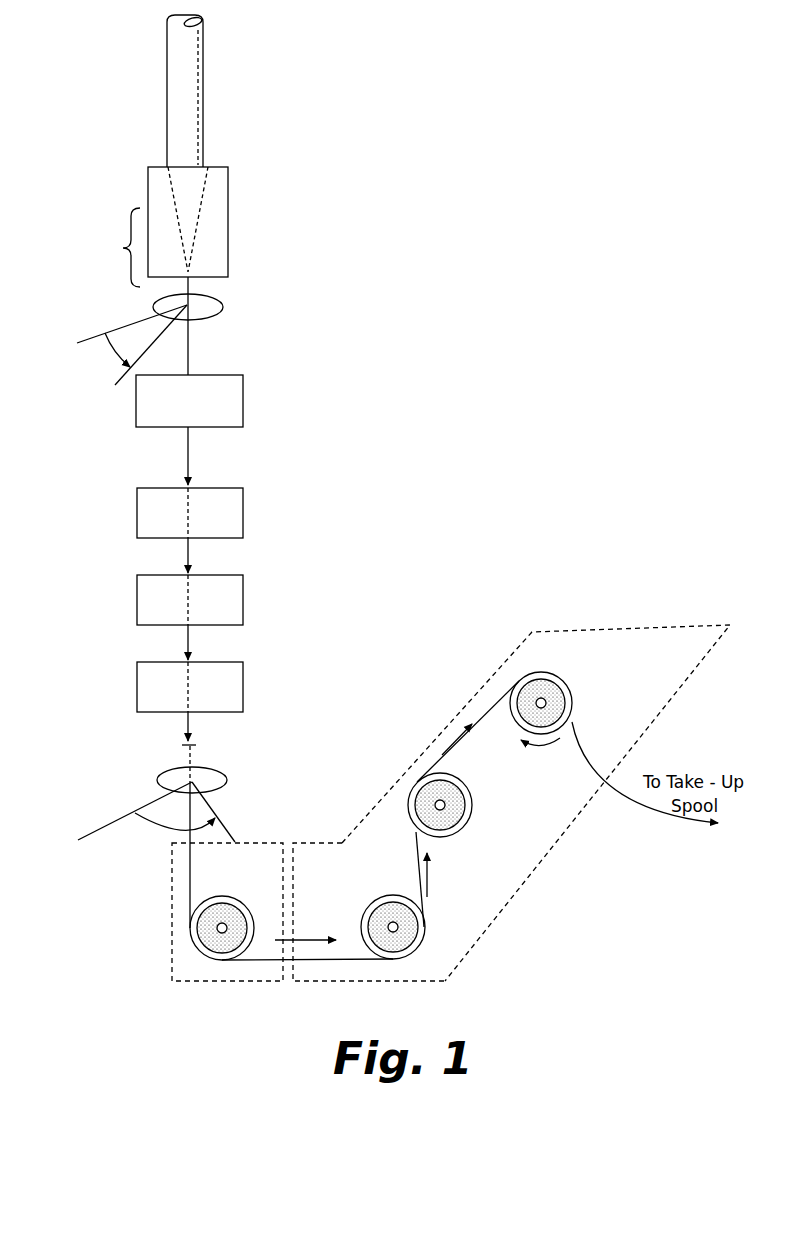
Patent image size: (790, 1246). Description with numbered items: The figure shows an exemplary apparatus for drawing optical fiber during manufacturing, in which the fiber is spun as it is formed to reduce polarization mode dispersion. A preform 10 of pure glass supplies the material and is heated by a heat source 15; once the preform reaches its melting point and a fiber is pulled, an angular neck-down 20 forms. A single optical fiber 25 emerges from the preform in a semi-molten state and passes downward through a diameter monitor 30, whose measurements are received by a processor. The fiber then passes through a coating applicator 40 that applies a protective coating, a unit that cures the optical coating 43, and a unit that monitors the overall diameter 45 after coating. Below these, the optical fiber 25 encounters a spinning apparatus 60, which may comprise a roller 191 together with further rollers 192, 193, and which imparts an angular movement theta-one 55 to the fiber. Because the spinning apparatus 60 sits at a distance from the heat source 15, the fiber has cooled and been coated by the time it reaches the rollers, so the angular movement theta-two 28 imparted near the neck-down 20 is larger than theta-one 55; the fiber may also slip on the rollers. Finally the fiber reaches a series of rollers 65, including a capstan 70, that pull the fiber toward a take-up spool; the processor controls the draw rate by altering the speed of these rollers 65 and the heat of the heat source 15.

The preform 10 is at (168, 63).
The heat source 15 is at (228, 200).
The neck-down 20 is at (95, 243).
The optical fiber 25 is at (192, 463).
The angular movement theta-two 28 is at (80, 377).
The diameter monitor 30 is at (243, 393).
The coating applicator 40 is at (137, 508).
The coating curing unit 43 is at (137, 603).
The overall diameter monitor 45 is at (137, 687).
The angular movement theta-one 55 is at (138, 848).
The spinning apparatus 60 is at (182, 982).
The series of rollers 65 is at (445, 728).
The capstan 70 is at (570, 690).
The roller 191 is at (220, 897).
The roller 192 is at (387, 897).
The roller 193 is at (472, 802).